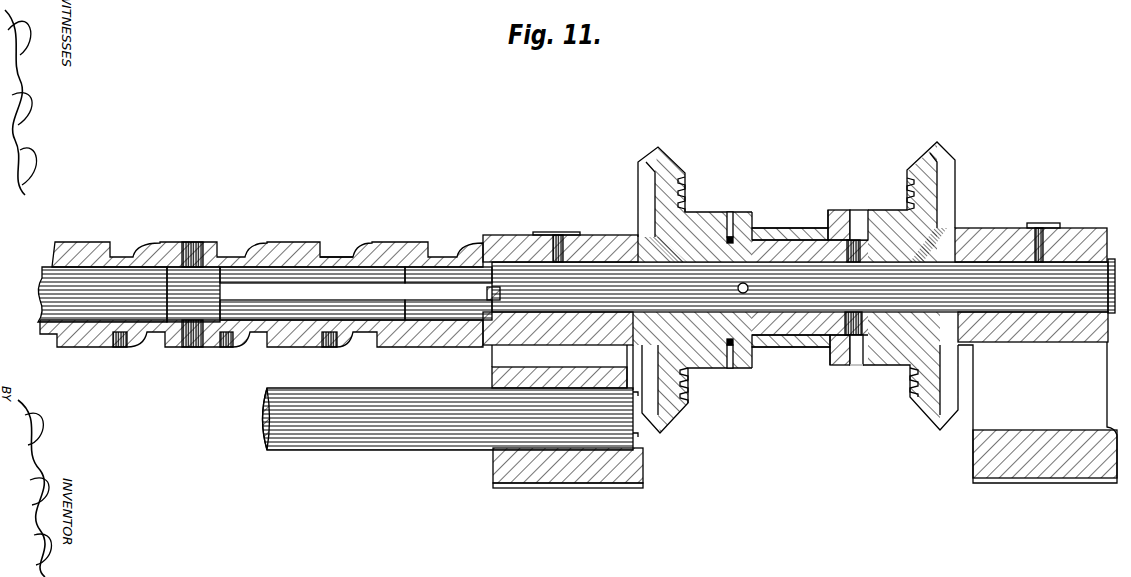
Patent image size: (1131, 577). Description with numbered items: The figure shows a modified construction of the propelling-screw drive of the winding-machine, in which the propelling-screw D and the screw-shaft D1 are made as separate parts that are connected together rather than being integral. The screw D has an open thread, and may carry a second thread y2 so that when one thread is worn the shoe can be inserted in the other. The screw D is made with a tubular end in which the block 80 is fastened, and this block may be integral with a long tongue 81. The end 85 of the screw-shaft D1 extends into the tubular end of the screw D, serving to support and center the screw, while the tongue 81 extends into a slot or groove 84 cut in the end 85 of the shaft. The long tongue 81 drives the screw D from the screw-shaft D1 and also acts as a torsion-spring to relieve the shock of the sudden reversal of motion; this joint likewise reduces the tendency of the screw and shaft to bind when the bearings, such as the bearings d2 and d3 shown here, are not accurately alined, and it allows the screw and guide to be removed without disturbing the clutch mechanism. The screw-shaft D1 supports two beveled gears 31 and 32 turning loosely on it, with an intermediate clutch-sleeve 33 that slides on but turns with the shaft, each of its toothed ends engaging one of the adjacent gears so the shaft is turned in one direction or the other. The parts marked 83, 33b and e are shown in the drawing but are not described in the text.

The propelling-screw D is at (53, 260).
The fastening screw 83 is at (173, 242).
The block 80 is at (190, 298).
The second thread y2 is at (338, 254).
The long tongue 81 is at (312, 293).
The end of the shaft 85 is at (437, 272).
The slot or groove 84 is at (492, 289).
The bearing d2 is at (590, 244).
The beveled gear 32 is at (647, 160).
The sleeve 33b is at (810, 286).
The clutch-sleeve 33 is at (840, 217).
The beveled gear 31 is at (943, 154).
The bearing d3 is at (1036, 347).
The screw-shaft D1 is at (922, 283).
The tube e is at (330, 446).